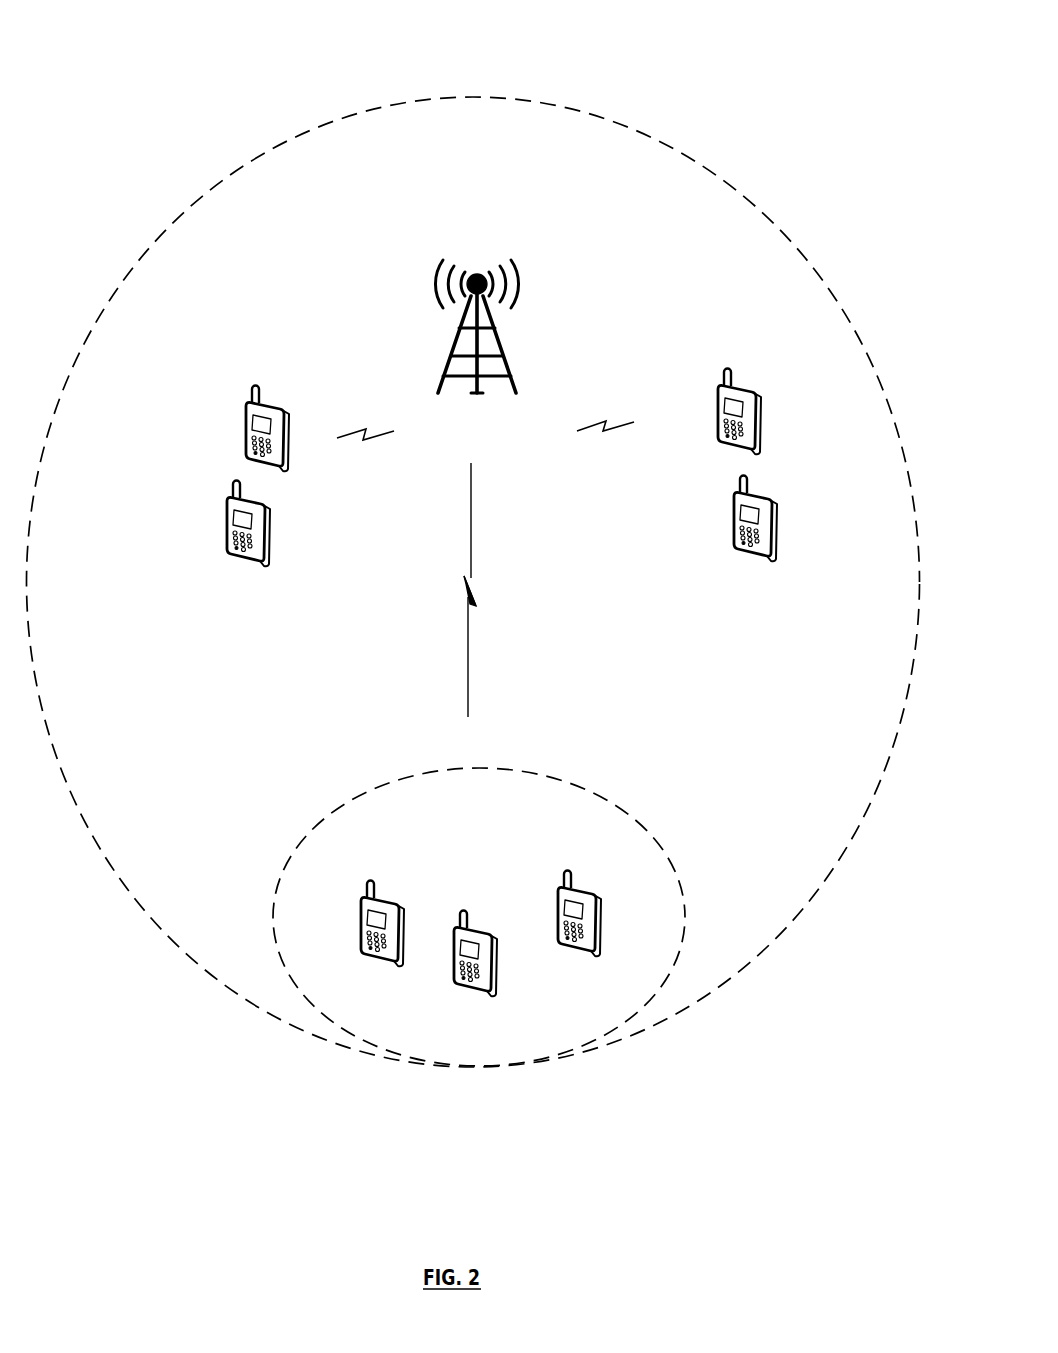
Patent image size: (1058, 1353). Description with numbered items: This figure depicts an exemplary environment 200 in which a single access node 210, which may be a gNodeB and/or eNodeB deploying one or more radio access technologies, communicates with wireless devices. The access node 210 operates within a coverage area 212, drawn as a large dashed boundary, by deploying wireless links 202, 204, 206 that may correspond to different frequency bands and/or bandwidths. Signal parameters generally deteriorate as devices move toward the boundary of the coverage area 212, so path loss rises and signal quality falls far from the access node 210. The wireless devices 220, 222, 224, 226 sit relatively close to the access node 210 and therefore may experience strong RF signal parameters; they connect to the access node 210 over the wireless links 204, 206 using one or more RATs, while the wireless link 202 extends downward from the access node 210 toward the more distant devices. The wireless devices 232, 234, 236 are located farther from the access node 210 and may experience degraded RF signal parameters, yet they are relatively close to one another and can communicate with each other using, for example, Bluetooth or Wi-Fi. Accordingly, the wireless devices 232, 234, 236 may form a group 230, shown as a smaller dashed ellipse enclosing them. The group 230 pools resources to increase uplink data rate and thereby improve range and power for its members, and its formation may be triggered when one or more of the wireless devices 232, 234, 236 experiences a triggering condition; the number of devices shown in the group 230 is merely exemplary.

The environment 200 is at (798, 66).
The wireless link 202 is at (467, 645).
The wireless link 204 is at (381, 443).
The wireless link 206 is at (611, 437).
The access node 210 is at (476, 314).
The coverage area 212 is at (152, 250).
The wireless device 220 is at (243, 437).
The wireless device 222 is at (232, 544).
The wireless device 224 is at (720, 435).
The wireless device 226 is at (737, 545).
The group 230 is at (428, 768).
The wireless device 232 is at (390, 920).
The wireless device 234 is at (489, 963).
The wireless device 236 is at (590, 903).